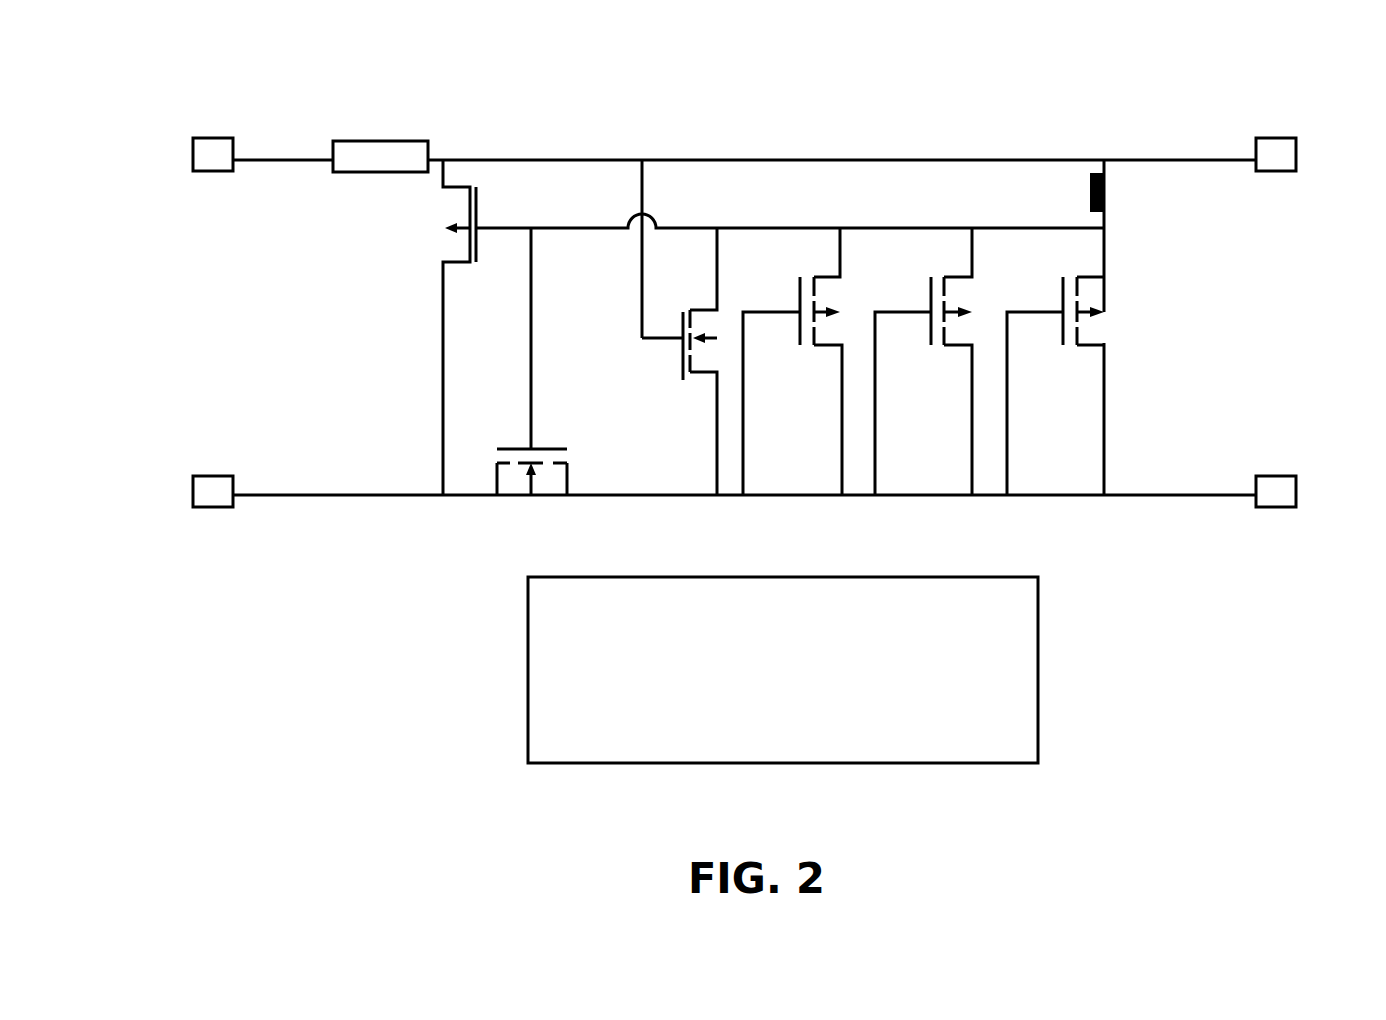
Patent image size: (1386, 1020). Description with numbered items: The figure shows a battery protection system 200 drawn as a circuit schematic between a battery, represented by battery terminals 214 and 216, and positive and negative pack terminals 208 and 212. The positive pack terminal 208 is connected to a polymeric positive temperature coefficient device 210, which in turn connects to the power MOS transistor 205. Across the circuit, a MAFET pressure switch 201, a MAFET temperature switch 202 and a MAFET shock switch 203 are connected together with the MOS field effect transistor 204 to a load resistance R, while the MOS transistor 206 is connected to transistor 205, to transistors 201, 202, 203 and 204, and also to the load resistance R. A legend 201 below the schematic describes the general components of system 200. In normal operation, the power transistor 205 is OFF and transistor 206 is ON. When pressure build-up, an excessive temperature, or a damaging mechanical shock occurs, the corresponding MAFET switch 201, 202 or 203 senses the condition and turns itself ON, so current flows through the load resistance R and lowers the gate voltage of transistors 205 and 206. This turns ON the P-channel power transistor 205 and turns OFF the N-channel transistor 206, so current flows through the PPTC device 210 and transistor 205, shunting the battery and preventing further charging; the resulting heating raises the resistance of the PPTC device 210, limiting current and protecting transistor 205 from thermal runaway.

The battery protection system 200 is at (205, 85).
The MAFET pressure switch 201 is at (1076, 264).
The MAFET temperature switch 202 is at (951, 264).
The MAFET shock switch 203 is at (821, 264).
The MOS field effect transistor 204 is at (696, 296).
The power MOSFET transistor 205 is at (456, 185).
The MOSFET transistor 206 is at (582, 481).
The positive Pack terminal 208 is at (210, 168).
The polymeric positive temperature coefficient (PPTC) device 210 is at (368, 172).
The negative Pack terminal 212 is at (207, 480).
The battery terminal 214 is at (1275, 480).
The battery terminal 216 is at (1272, 168).